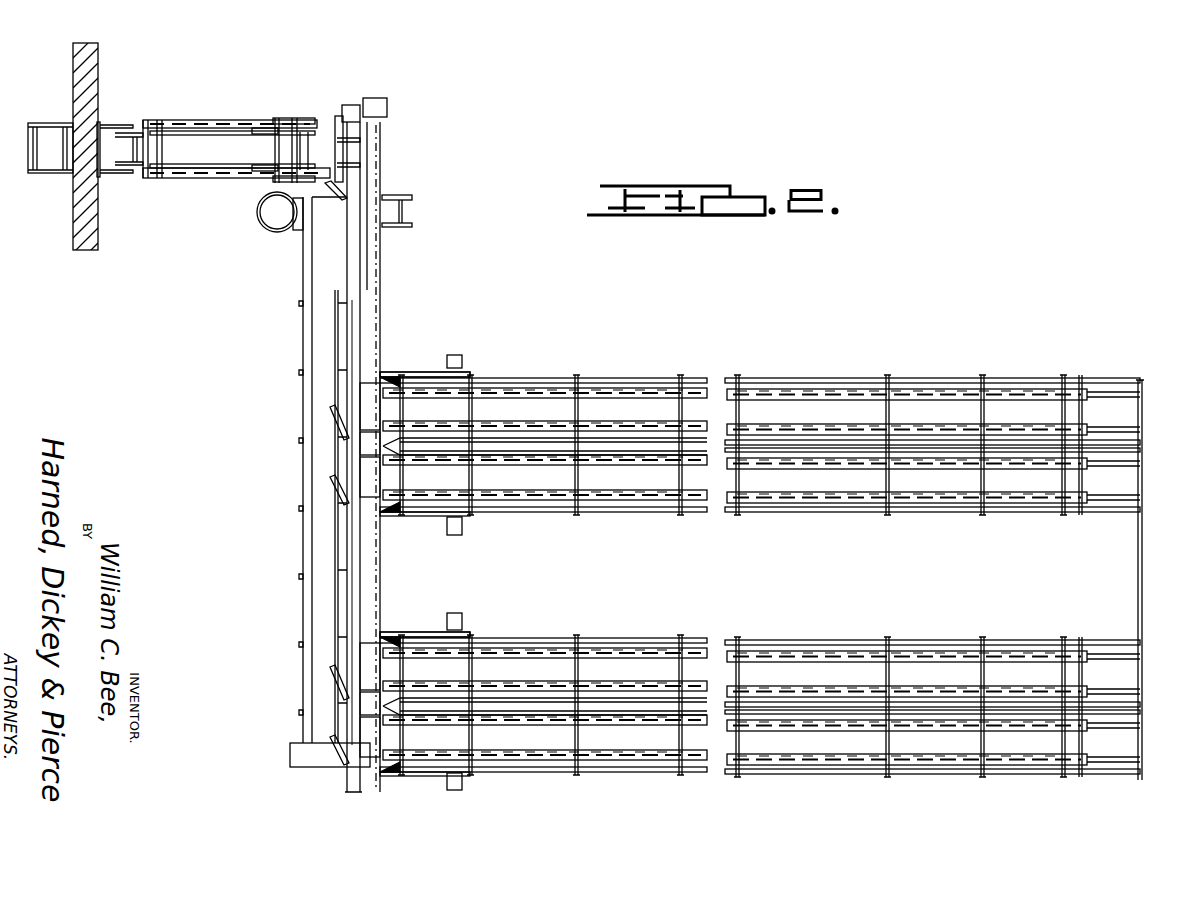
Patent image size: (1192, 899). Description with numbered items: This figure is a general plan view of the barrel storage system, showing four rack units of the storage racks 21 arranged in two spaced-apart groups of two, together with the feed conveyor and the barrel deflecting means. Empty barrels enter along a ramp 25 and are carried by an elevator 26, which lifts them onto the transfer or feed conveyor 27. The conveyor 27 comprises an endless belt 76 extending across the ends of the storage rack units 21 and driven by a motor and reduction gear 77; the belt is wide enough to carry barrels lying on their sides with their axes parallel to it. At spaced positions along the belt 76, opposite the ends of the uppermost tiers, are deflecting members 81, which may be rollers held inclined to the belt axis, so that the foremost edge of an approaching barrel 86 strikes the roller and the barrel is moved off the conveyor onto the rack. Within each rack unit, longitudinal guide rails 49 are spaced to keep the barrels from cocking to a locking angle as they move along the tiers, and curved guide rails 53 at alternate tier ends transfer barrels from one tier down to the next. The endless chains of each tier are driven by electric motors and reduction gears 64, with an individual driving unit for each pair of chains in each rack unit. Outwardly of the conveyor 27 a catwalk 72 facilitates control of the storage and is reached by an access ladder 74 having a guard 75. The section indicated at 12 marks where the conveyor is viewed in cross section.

The section line 12- 12 is at (276, 568).
The storage rack 21 is at (640, 377).
The ramp 25 is at (62, 175).
The elevator 26 is at (212, 180).
The feed conveyor 27 is at (385, 296).
The longitudinal guide rail 49 is at (925, 382).
The curved guide rail 53 is at (1108, 396).
The electric motor and reduction gear 64 is at (462, 358).
The catwalk 72 is at (302, 598).
The access ladder 74 is at (297, 230).
The guard 75 is at (268, 228).
The endless belt 76 is at (352, 350).
The motor and reduction gear 77 is at (388, 105).
The deflecting member 81 is at (345, 432).
The barrel 86 is at (395, 373).